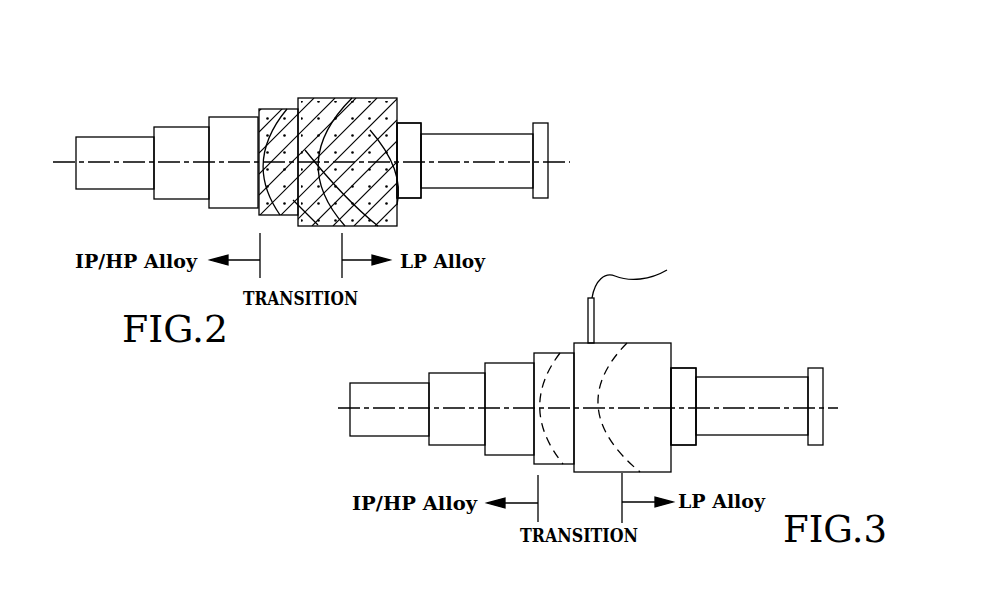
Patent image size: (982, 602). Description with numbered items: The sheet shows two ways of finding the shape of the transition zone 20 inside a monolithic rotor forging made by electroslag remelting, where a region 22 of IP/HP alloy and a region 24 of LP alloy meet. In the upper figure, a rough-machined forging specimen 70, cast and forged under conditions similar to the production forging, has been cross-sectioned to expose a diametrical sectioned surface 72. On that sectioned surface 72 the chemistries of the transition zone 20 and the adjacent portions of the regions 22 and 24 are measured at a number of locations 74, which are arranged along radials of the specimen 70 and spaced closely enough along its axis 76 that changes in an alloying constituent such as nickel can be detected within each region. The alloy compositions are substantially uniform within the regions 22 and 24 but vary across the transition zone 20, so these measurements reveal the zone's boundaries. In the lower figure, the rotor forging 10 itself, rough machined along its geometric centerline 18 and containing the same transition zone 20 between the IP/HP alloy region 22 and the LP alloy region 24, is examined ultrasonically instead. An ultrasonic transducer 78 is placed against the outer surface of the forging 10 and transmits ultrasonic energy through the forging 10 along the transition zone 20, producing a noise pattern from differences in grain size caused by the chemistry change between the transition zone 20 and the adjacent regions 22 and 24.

In FIG. 3, the rotor forging 10 is at (385, 455).
In FIG. 3, the geometric centerline 18 is at (743, 410).
In FIG. 2, the transition zone 20 is at (345, 102).
In FIG. 3, the transition zone 20 is at (595, 357).
In FIG. 2, the IP/HP alloy region 22 is at (192, 135).
In FIG. 3, the IP/HP alloy region 22 is at (467, 438).
In FIG. 2, the LP alloy region 24 is at (397, 117).
In FIG. 3, the LP alloy region 24 is at (672, 360).
In FIG. 2, the forging specimen 70 is at (108, 114).
In FIG. 2, the sectioned surface 72 is at (382, 102).
In FIG. 2, the locations 74 is at (343, 228).
In FIG. 2, the axis 76 is at (482, 162).
In FIG. 3, the ultrasonic transducer 78 is at (595, 322).